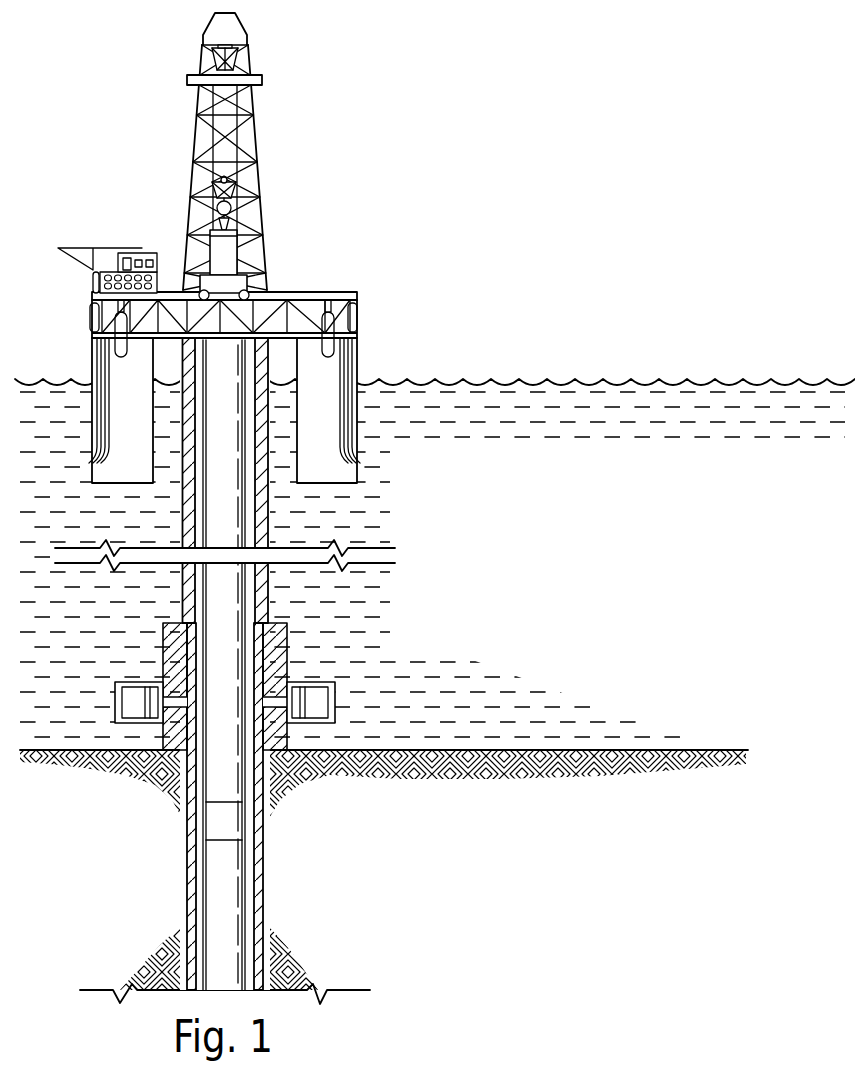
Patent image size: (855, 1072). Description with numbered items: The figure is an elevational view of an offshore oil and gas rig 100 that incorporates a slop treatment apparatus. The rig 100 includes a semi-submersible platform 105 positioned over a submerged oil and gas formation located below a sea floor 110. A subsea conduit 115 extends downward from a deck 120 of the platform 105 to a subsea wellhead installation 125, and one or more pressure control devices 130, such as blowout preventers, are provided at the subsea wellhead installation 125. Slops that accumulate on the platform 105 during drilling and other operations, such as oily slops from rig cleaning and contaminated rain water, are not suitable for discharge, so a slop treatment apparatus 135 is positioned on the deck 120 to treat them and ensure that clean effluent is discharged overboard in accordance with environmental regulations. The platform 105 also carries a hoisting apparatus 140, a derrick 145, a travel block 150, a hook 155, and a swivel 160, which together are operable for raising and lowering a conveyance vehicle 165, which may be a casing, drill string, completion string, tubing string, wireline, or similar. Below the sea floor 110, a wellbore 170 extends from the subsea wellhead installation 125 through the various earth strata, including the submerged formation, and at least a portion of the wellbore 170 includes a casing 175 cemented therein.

The offshore oil and gas rig 100 is at (383, 157).
The semi-submersible platform 105 is at (343, 292).
The sea floor 110 is at (728, 748).
The subsea conduit 115 is at (268, 503).
The deck 120 is at (367, 342).
The subsea wellhead installation 125 is at (157, 652).
The pressure control device 130 is at (318, 692).
The slop treatment apparatus 135 is at (84, 288).
The hoisting apparatus 140 is at (247, 257).
The derrick 145 is at (203, 55).
The travel block 150 is at (210, 188).
The hook 155 is at (213, 210).
The swivel 160 is at (238, 190).
The conveyance vehicle 165 is at (248, 872).
The wellbore 170 is at (196, 822).
The casing 175 is at (196, 872).